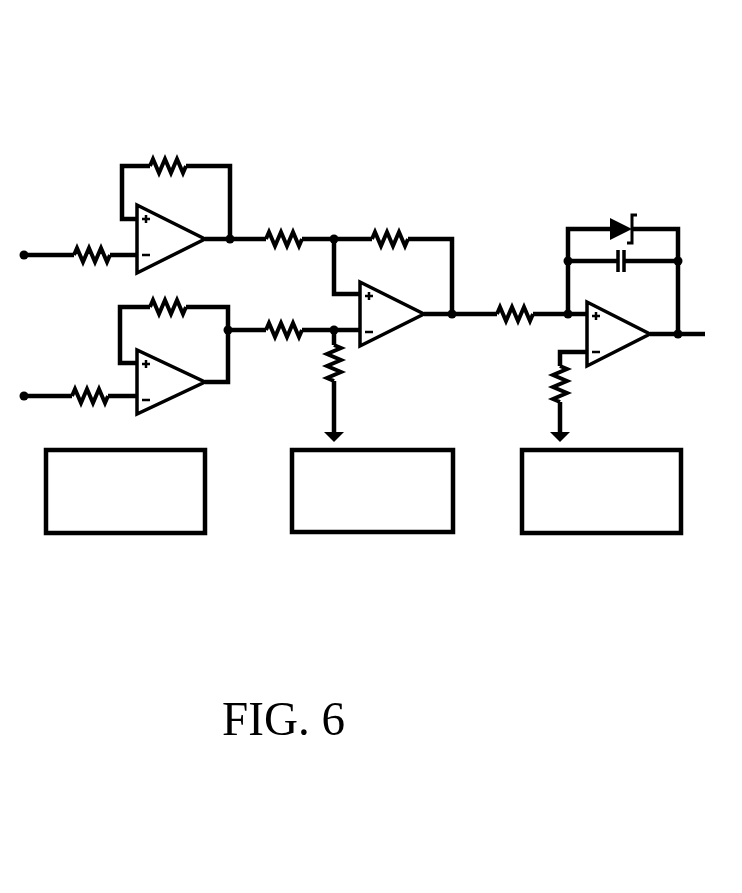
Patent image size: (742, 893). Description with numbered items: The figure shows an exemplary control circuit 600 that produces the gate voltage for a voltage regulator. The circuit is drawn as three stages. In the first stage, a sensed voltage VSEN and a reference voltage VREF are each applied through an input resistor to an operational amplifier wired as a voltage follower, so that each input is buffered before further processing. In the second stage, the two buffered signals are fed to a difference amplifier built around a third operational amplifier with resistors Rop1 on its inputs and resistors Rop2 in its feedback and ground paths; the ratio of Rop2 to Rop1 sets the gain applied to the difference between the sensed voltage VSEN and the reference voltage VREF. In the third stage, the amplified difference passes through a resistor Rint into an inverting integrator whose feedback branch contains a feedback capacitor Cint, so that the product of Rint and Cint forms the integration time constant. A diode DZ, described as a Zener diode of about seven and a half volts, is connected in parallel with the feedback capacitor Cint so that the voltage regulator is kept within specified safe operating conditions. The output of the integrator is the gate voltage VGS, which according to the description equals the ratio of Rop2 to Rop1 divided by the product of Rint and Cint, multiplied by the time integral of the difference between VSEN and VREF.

The control circuit 600 is at (365, 288).
The sensed voltage VSEN is at (79, 236).
The reference voltage VREF is at (77, 379).
The difference amplifier resistor Rop1 is at (283, 287).
The difference amplifier resistor Rop2 is at (376, 291).
The inverting integrator resistor Rint is at (529, 340).
The feedback capacitor Cint is at (623, 281).
The diode DZ is at (617, 212).
The gate voltage VGS is at (691, 353).